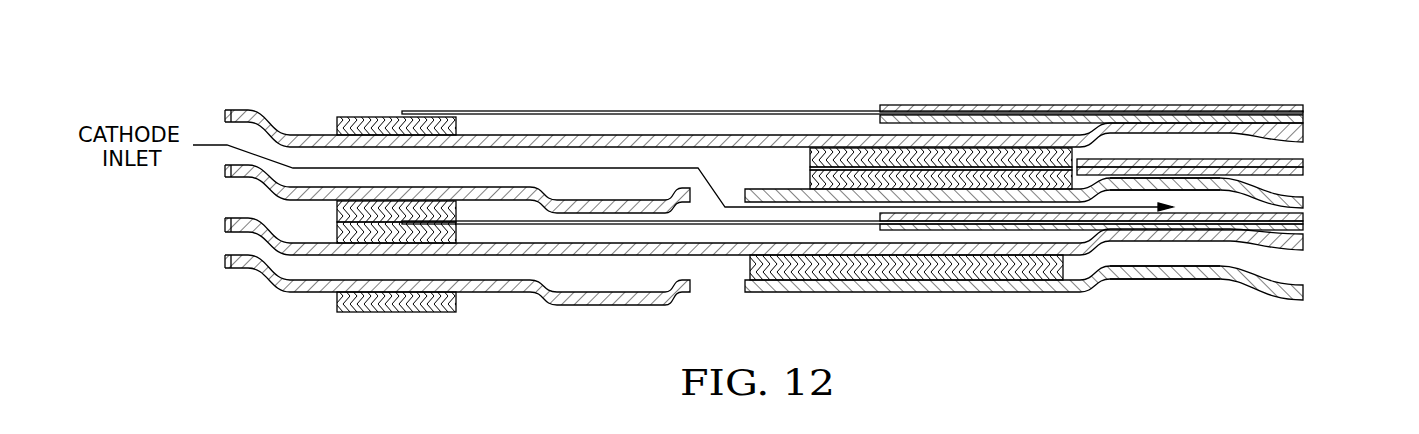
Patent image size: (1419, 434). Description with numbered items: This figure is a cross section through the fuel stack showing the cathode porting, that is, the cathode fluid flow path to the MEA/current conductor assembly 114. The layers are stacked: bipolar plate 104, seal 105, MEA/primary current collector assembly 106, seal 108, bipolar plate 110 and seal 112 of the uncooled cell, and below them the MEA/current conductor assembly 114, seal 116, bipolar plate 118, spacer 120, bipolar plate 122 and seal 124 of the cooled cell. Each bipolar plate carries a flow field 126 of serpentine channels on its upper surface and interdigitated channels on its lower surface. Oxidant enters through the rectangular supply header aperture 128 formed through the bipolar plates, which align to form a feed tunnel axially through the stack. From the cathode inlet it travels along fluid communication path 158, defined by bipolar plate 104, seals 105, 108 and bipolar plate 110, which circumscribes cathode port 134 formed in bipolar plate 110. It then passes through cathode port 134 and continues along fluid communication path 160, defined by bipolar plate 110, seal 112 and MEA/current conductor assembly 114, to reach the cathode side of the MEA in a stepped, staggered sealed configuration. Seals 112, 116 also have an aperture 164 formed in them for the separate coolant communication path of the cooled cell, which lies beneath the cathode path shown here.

The bipolar plate 104 is at (1303, 132).
The seal 105 is at (968, 160).
The MEA/primary current collector assembly 106 is at (1303, 168).
The seal 108 is at (830, 180).
The bipolar plate 110 is at (1303, 203).
The seal 112 is at (343, 213).
The MEA/current conductor assembly 114 is at (1303, 222).
The seal 116 is at (353, 233).
The bipolar plate 118 is at (1303, 242).
The spacer 120 is at (790, 265).
The bipolar plate 122 is at (1303, 295).
The seal 124 is at (395, 303).
The flow field 126 is at (1165, 197).
The supply header aperture 128 is at (224, 117).
The cathode port 134 is at (745, 195).
The fluid communication path 158 is at (507, 178).
The fluid communication path 160 is at (820, 208).
The aperture 164 is at (473, 268).